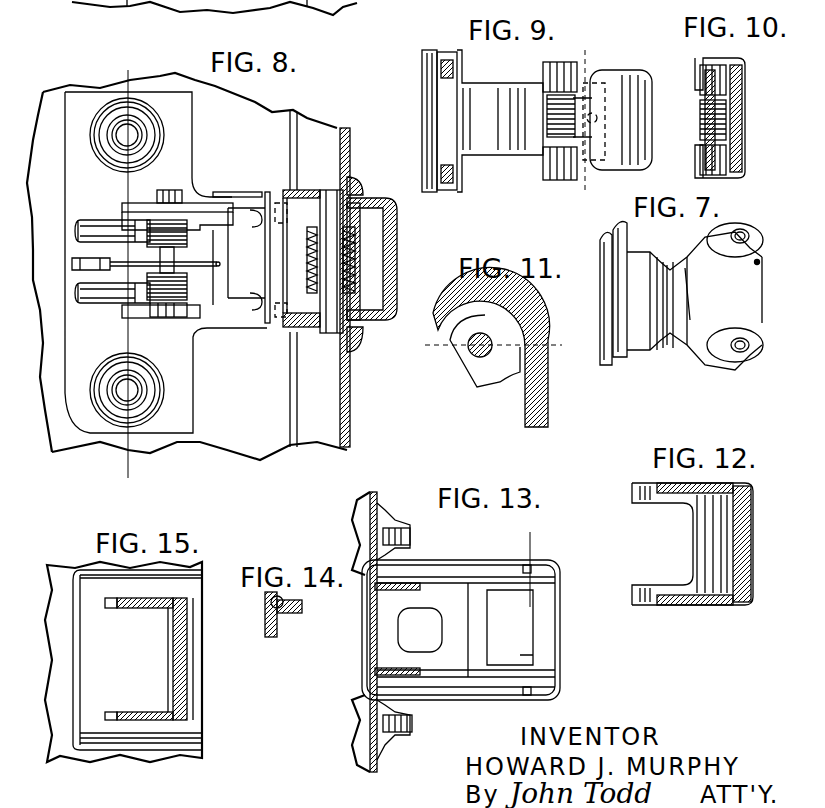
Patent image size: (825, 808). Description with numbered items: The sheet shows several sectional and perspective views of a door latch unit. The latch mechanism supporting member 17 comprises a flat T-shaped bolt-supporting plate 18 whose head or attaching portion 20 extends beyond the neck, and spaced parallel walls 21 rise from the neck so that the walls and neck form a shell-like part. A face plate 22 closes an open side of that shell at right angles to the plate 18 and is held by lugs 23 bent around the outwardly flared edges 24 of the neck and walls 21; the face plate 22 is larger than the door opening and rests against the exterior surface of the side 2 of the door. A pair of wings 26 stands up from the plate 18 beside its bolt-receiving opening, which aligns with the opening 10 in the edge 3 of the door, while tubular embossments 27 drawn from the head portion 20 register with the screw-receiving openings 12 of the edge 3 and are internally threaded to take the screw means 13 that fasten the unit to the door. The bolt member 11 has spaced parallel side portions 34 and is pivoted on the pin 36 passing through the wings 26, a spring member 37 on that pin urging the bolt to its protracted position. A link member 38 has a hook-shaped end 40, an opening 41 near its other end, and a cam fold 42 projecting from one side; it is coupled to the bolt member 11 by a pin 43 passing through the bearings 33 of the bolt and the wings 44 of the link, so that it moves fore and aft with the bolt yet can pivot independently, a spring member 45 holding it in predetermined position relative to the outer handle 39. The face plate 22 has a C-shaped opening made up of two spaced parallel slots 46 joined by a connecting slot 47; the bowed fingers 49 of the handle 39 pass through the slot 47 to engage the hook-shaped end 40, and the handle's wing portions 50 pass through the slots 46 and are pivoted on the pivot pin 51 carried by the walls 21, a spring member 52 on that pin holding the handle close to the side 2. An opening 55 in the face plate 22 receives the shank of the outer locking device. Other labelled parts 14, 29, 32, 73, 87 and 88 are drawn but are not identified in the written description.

In FIG. 8, the side of the door 2 is at (347, 400).
In FIG. 15, the side of the door 2 is at (198, 565).
In FIG. 8, the edge of the door 3 is at (223, 440).
In FIG. 13, the edge of the door 3 is at (370, 635).
In FIG. 9, the opening of the edge 10 is at (574, 53).
In FIG. 8, the bolt member 11 is at (95, 303).
In FIG. 9, the bolt member 11 is at (635, 75).
In FIG. 11, the screw-receiving openings 12 is at (565, 336).
In FIG. 13, the screw-receiving openings 12 is at (383, 512).
In FIG. 8, the screw means 13 is at (140, 73).
In FIG. 13, the screw means 13 is at (407, 528).
In FIG. 13, the section line 14- 14 is at (542, 535).
In FIG. 8, the latch mechanism supporting member 17 is at (245, 193).
In FIG. 8, the bolt-supporting plate 18 is at (187, 120).
In FIG. 13, the bolt-supporting plate 18 is at (370, 680).
In FIG. 8, the head portion 20 is at (72, 140).
In FIG. 8, the spaced parallel walls 21 is at (213, 193).
In FIG. 8, the face plate 22 is at (353, 182).
In FIG. 13, the face plate 22 is at (545, 620).
In FIG. 15, the face plate 22 is at (180, 748).
In FIG. 13, the lugs 23 is at (527, 695).
In FIG. 14, the lugs 23 is at (285, 600).
In FIG. 14, the outwardly flared edges 24 is at (265, 612).
In FIG. 8, the wings 26 is at (193, 207).
In FIG. 13, the wings 26 is at (420, 672).
In FIG. 8, the tubular embossments 27 is at (113, 410).
In FIG. 13, the tubular embossments 27 is at (395, 740).
In FIG. 9, the bracket portion 29 is at (600, 152).
In FIG. 10, the bracket portion 29 is at (700, 150).
In FIG. 8, the pinion 32 is at (78, 220).
In FIG. 9, the bearings 33 is at (545, 165).
In FIG. 10, the bearings 33 is at (700, 75).
In FIG. 8, the side portions 34 is at (200, 203).
In FIG. 8, the pin 36 is at (167, 190).
In FIG. 8, the spring member 37 is at (152, 300).
In FIG. 8, the link member 38 is at (243, 325).
In FIG. 9, the link member 38 is at (485, 73).
In FIG. 7, the link member 38 is at (615, 228).
In FIG. 8, the outer handle 39 is at (385, 245).
In FIG. 11, the outer handle 39 is at (545, 423).
In FIG. 12, the outer handle 39 is at (752, 522).
In FIG. 15, the outer handle 39 is at (188, 675).
In FIG. 8, the hook-shaped end 40 is at (280, 258).
In FIG. 9, the hook-shaped end 40 is at (430, 50).
In FIG. 7, the hook-shaped end 40 is at (608, 365).
In FIG. 8, the opening 41 is at (220, 266).
In FIG. 7, the opening 41 is at (760, 262).
In FIG. 9, the fold 42 is at (505, 145).
In FIG. 7, the fold 42 is at (662, 340).
In FIG. 9, the pin 43 is at (548, 147).
In FIG. 10, the pin 43 is at (722, 178).
In FIG. 9, the wings 44 is at (550, 62).
In FIG. 10, the wings 44 is at (730, 68).
In FIG. 7, the wings 44 is at (745, 230).
In FIG. 9, the spring member 45 is at (548, 100).
In FIG. 10, the spring member 45 is at (700, 110).
In FIG. 8, the slots 46 is at (365, 345).
In FIG. 13, the slots 46 is at (540, 640).
In FIG. 15, the slots 46 is at (120, 608).
In FIG. 13, the slot 47 is at (480, 636).
In FIG. 15, the slot 47 is at (168, 635).
In FIG. 9, the bowed fingers 49 is at (448, 185).
In FIG. 11, the bowed fingers 49 is at (437, 312).
In FIG. 12, the bowed fingers 49 is at (635, 500).
In FIG. 8, the wing portions 50 is at (308, 333).
In FIG. 11, the wing portions 50 is at (492, 378).
In FIG. 12, the wing portions 50 is at (728, 483).
In FIG. 15, the wing portions 50 is at (140, 598).
In FIG. 8, the pivot pin 51 is at (330, 213).
In FIG. 11, the pivot pin 51 is at (470, 358).
In FIG. 8, the spring member 52 is at (370, 258).
In FIG. 13, the opening 55 is at (420, 612).
In FIG. 8, the shaft 73 is at (90, 283).
In FIG. 8, the bracket 87 is at (220, 290).
In FIG. 9, the bracket 87 is at (600, 80).
In FIG. 10, the bracket 87 is at (742, 110).
In FIG. 7, the bracket 87 is at (760, 283).
In FIG. 8, the link 88 is at (80, 227).